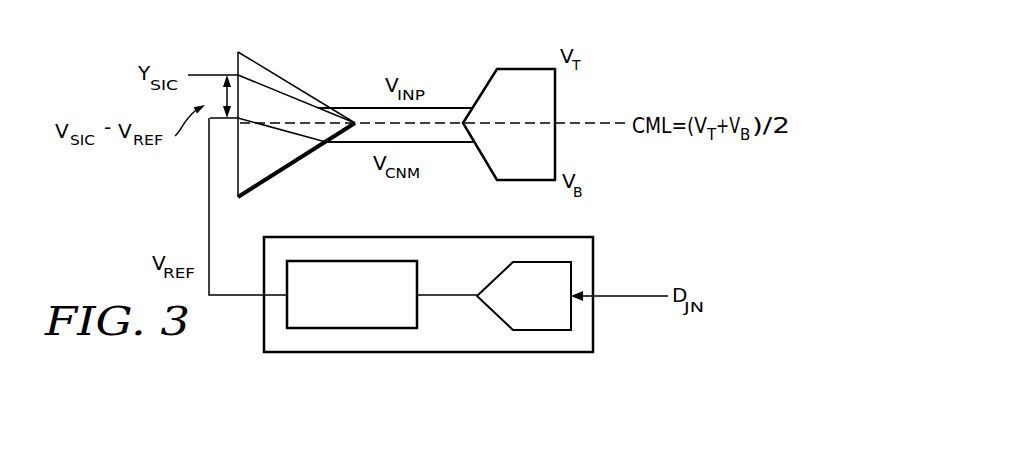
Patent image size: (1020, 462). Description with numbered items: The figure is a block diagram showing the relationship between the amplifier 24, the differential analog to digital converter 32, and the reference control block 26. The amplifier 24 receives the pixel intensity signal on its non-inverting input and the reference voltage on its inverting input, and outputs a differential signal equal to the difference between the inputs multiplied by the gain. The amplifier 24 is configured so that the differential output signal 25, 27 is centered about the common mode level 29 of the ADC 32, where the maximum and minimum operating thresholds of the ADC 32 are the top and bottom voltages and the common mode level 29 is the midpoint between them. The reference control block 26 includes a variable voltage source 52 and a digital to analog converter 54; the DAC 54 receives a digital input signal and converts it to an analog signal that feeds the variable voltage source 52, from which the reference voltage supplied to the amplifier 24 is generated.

The amplifier 24 is at (310, 165).
The differential output signal 25 is at (361, 107).
The differential output signal 27 is at (441, 142).
The common mode level (CML) 29 is at (604, 123).
The analog to digital converter (ADC) 32 is at (527, 68).
The reference control block 26 is at (594, 260).
The variable voltage source 52 is at (418, 278).
The digital to analog converter (DAC) 54 is at (490, 312).